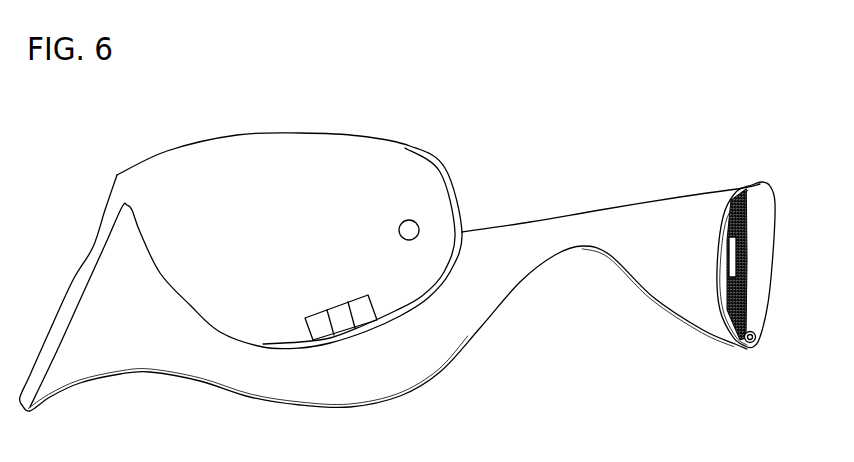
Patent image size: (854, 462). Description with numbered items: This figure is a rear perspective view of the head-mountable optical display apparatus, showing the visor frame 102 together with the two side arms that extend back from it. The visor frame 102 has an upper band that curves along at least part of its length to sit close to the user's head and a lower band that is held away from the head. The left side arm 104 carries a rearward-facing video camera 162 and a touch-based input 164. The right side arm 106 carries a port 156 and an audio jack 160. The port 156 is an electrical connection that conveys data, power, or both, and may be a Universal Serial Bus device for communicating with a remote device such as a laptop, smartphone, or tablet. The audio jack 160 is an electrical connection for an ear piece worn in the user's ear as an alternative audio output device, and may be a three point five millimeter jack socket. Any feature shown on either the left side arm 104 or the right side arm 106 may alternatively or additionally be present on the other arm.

The visor frame 102 is at (242, 118).
The left side arm 104 is at (313, 160).
The right side arm 106 is at (763, 196).
The port 156 is at (745, 250).
The audio jack 160 is at (757, 343).
The rearward-facing video camera 162 is at (430, 203).
The touch-based input 164 is at (338, 328).